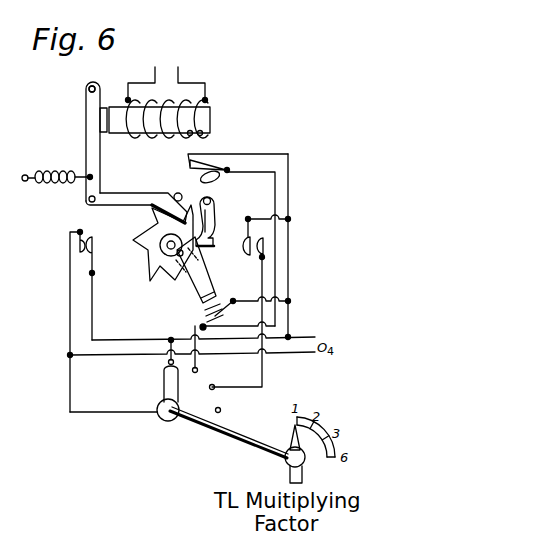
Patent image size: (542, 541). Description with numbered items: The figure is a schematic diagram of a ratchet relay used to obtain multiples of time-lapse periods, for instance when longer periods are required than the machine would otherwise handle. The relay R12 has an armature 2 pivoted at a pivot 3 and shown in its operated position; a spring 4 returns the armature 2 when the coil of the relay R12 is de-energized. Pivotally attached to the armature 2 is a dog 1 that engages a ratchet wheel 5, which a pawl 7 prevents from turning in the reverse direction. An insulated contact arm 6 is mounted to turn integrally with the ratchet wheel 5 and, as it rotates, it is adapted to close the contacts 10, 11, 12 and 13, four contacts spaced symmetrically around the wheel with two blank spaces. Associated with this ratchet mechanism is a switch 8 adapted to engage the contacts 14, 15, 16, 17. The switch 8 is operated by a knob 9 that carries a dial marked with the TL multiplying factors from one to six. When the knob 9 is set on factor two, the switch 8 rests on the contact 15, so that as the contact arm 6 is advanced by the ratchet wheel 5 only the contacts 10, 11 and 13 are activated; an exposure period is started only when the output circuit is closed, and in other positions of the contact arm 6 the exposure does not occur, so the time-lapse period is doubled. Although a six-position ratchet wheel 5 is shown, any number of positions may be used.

The dog 1 is at (128, 199).
The armature 2 is at (86, 124).
The pivot 3 is at (88, 89).
The spring 4 is at (55, 172).
The ratchet wheel 5 is at (152, 252).
The contact arm 6 is at (195, 290).
The pawl 7 is at (212, 218).
The switch 8 is at (179, 428).
The knob 9 is at (285, 463).
The contact 10 is at (82, 321).
The contact 11 is at (238, 240).
The contact 12 is at (250, 301).
The contact 13 is at (244, 313).
The contact 14 is at (168, 362).
The contact 15 is at (201, 366).
The contact 16 is at (214, 386).
The contact 17 is at (221, 410).
The relay R12 is at (159, 102).